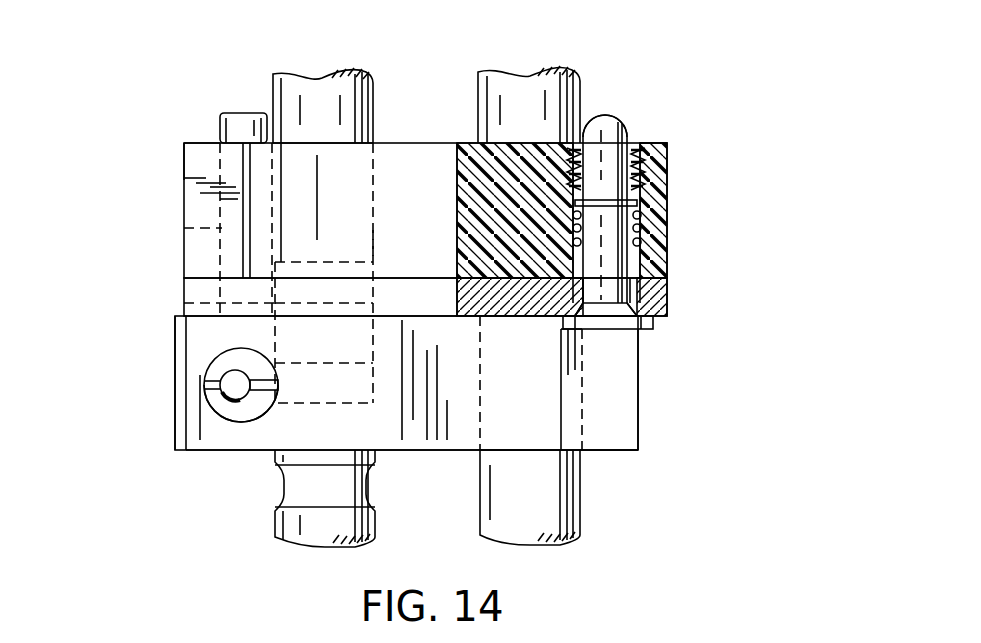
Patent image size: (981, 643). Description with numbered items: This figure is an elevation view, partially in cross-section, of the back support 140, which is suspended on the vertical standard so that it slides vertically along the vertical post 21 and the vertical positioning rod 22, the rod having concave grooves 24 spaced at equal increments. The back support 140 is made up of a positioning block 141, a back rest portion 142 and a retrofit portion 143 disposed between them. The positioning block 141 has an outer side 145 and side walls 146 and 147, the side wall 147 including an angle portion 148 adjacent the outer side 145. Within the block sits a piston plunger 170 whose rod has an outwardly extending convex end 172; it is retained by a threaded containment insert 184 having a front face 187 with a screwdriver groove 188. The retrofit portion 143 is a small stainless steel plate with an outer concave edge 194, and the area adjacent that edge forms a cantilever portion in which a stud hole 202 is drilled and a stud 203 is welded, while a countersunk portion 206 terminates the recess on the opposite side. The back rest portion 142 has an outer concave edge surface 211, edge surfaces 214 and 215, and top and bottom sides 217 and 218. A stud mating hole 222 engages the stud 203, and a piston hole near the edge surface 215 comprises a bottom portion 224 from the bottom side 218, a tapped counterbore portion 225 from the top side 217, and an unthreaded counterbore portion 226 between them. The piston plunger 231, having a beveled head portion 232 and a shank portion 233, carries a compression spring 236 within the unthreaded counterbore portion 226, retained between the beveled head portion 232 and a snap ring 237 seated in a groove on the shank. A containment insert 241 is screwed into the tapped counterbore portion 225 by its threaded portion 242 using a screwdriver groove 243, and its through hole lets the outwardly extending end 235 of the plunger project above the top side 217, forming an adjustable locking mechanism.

The vertical post 21 is at (512, 82).
The vertical positioning rod 22 is at (360, 102).
The concave grooves 24 is at (302, 495).
The back support 140 is at (147, 142).
The positioning block 141 is at (174, 352).
The back rest portion 142 is at (183, 212).
The retrofit portion 143 is at (184, 290).
The outer side 145 is at (400, 440).
The side wall 146 is at (215, 403).
The side wall 147 is at (640, 428).
The angle portion 148 is at (600, 438).
The piston plunger 170 is at (220, 393).
The outwardly extending convex end 172 is at (233, 393).
The threaded containment insert 184 is at (255, 423).
The front face 187 is at (210, 372).
The screwdriver groove 188 is at (207, 390).
The outer concave edge 194 is at (374, 245).
The stud hole 202 is at (184, 303).
The stud 203 is at (243, 118).
The countersunk portion 206 is at (579, 318).
The outer concave edge surface 211 is at (330, 157).
The edge surface 214 is at (184, 165).
The edge surface 215 is at (668, 214).
The top side 217 is at (204, 142).
The bottom side 218 is at (340, 280).
The stud mating hole 222 is at (184, 229).
The bottom portion 224 is at (648, 268).
The tapped counterbore portion 225 is at (665, 148).
The unthreaded counterbore portion 226 is at (575, 236).
The piston plunger 231 is at (612, 104).
The beveled head portion 232 is at (645, 330).
The shank portion 233 is at (625, 285).
The outwardly extending end 235 is at (612, 118).
The compression spring 236 is at (655, 233).
The snap ring 237 is at (663, 203).
The containment insert 241 is at (655, 172).
The threaded portion 242 is at (560, 178).
The screwdriver groove 243 is at (577, 148).